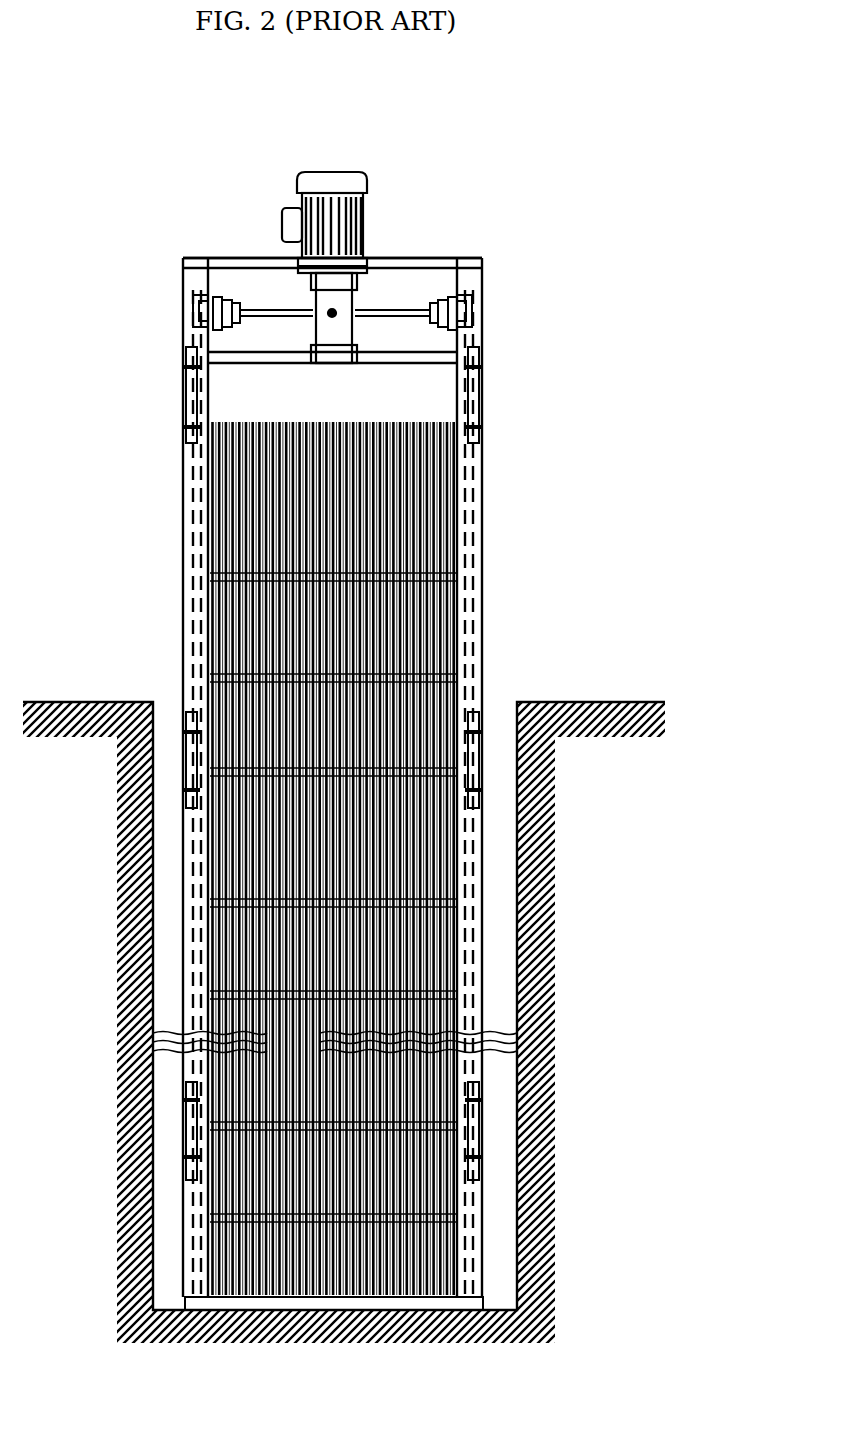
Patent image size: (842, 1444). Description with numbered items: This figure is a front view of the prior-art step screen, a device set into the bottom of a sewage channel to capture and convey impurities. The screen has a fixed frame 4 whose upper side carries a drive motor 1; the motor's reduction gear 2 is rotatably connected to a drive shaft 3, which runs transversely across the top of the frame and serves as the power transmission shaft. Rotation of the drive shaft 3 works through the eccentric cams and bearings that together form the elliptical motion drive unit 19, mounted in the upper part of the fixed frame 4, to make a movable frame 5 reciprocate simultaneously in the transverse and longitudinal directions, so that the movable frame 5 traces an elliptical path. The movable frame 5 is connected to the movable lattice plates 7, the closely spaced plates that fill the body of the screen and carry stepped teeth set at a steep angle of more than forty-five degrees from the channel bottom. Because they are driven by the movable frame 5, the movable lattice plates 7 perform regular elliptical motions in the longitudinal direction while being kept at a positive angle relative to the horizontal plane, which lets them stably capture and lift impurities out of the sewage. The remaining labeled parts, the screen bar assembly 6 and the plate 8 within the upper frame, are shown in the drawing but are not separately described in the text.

The drive motor 1 is at (305, 182).
The reduction gear 2 is at (312, 293).
The drive shaft 3 is at (410, 312).
The fixed frame 4 is at (482, 553).
The movable frame 5 is at (468, 510).
The screen bars 6 is at (437, 845).
The movable lattice plates 7 is at (437, 933).
The support plate 8 is at (388, 357).
The elliptical motion drive unit 19 is at (200, 280).